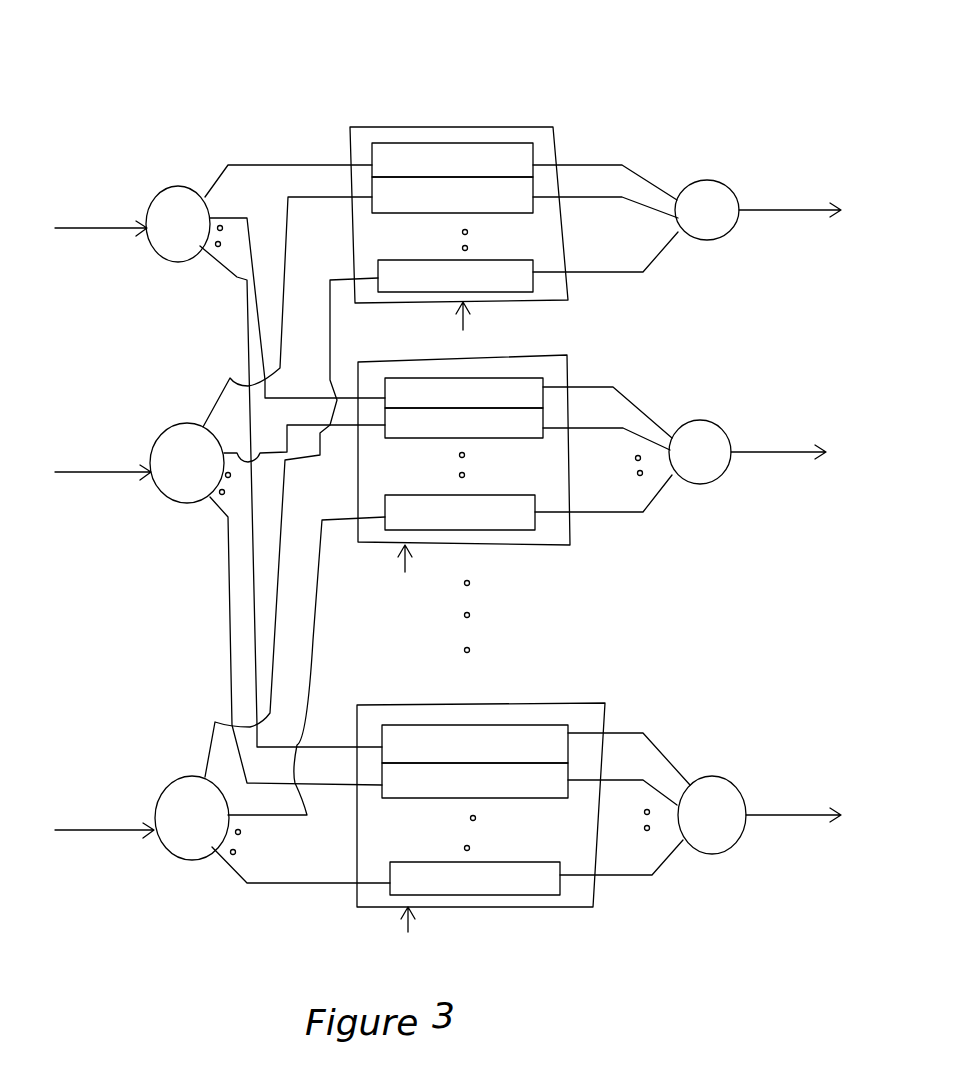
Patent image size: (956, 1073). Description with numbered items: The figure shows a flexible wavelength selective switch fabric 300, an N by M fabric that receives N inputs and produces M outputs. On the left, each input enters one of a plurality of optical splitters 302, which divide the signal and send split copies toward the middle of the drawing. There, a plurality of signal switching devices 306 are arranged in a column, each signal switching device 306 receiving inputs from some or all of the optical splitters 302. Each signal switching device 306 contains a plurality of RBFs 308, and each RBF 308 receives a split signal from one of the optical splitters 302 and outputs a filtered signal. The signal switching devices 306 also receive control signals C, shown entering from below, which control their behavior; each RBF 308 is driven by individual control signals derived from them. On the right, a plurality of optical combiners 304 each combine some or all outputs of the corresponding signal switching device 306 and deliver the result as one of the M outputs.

The flexible wavelength selective switch fabric 300 is at (322, 43).
The optical splitter 302 is at (174, 186).
The optical combiner 304 is at (713, 183).
The signal switching device 306 is at (400, 127).
The RBF 308 is at (533, 143).